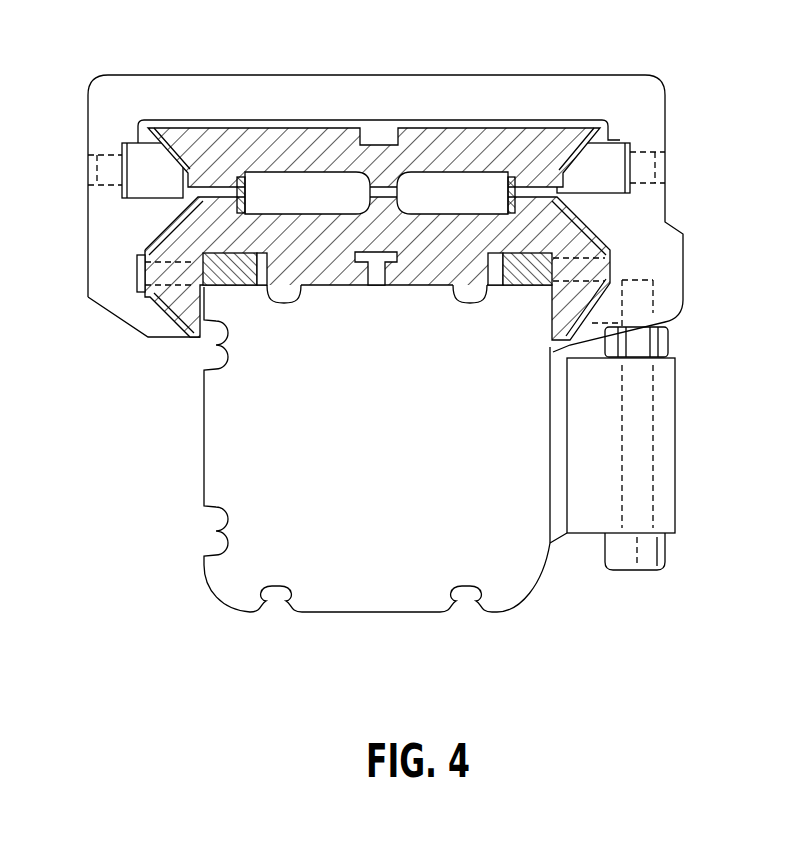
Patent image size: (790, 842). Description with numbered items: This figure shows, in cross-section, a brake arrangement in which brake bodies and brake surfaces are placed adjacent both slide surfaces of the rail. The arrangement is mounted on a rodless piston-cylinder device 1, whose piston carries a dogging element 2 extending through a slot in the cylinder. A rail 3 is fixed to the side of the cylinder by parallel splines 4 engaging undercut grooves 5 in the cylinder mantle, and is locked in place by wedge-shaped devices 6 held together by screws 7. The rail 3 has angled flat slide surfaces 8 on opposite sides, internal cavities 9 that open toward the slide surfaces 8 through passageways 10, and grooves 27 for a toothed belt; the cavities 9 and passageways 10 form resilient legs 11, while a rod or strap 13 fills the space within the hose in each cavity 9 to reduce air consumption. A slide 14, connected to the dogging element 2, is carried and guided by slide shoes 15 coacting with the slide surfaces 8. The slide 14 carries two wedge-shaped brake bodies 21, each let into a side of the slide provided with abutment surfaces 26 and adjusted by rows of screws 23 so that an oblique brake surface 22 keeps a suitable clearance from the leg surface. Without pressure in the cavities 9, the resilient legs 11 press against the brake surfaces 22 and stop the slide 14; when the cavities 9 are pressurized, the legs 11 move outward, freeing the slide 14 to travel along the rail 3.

The piston-cylinder device 1 is at (245, 598).
The dogging element 2 is at (673, 500).
The rail 3 is at (452, 172).
The parallel splines 4 is at (300, 297).
The undercut grooves 5 is at (286, 303).
The wedge-shaped devices 6 is at (226, 286).
The screws 7 is at (138, 273).
The slide surfaces 8 is at (158, 238).
The internal cavities 9 is at (316, 172).
The passageway 10 is at (246, 193).
The leg 11 is at (244, 128).
The rod or strap 13 is at (247, 200).
The slide 14 is at (189, 93).
The slide shoes 15 is at (113, 213).
The brake body 21 is at (633, 150).
The brake surface 22 is at (571, 150).
The screws 23 is at (93, 160).
The abutment surfaces 26 is at (617, 140).
The grooves 27 is at (376, 144).